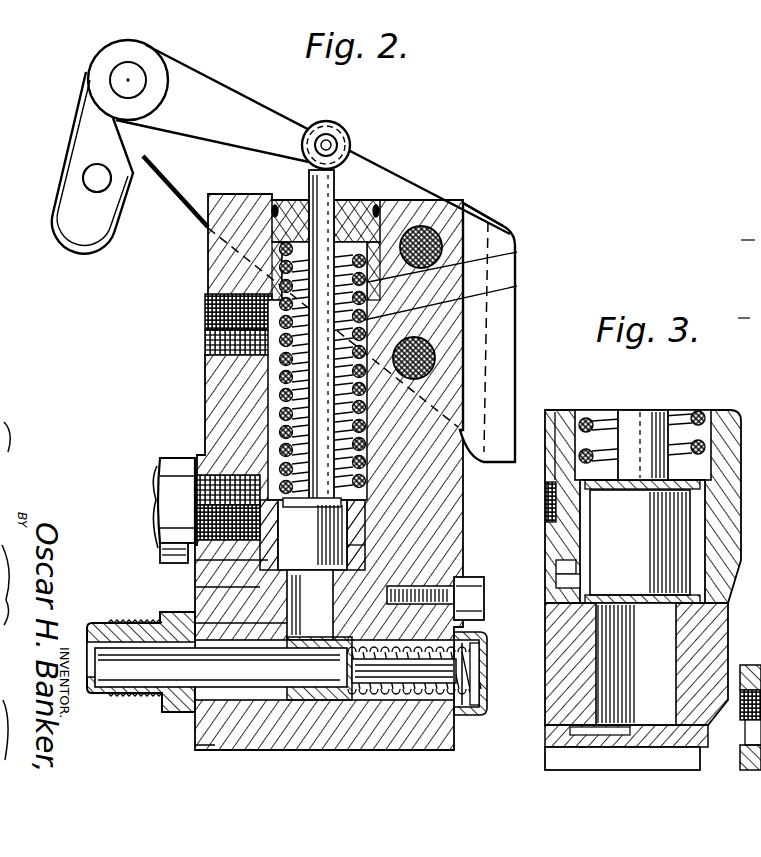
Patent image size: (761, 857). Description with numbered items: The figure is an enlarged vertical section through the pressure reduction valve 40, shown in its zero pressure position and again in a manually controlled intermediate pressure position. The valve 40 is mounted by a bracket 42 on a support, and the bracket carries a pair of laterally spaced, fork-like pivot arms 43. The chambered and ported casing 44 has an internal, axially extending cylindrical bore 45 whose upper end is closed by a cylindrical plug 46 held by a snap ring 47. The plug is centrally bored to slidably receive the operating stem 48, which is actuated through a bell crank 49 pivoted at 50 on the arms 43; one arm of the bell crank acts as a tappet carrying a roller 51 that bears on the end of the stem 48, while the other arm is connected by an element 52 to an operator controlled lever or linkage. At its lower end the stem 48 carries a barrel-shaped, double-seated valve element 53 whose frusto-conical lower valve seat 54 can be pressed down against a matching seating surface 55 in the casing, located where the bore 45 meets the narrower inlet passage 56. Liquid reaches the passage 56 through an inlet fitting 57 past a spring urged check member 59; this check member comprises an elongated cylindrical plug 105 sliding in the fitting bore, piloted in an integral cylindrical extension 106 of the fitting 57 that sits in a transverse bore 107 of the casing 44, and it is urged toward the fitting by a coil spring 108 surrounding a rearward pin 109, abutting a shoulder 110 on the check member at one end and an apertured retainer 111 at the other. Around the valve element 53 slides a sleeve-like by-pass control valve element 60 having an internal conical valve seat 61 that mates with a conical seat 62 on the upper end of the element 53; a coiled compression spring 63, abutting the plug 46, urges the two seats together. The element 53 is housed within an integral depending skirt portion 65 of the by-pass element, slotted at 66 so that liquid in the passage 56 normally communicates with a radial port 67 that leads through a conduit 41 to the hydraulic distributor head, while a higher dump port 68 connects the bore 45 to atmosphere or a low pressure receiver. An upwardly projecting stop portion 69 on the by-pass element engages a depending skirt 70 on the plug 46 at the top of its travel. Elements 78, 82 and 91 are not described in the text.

In FIG. 2, the pressure reduction valve 40 is at (510, 176).
In FIG. 2, the conduit 41 is at (182, 502).
In FIG. 2, the bracket 42 is at (500, 318).
In FIG. 2, the pivot arms 43 is at (171, 168).
In FIG. 2, the casing 44 is at (222, 378).
In FIG. 3, the casing 44 is at (560, 650).
In FIG. 2, the bore 45 is at (517, 286).
In FIG. 2, the plug 46 is at (351, 207).
In FIG. 2, the snap ring 47 is at (396, 206).
In FIG. 2, the operating stem 48 is at (316, 193).
In FIG. 3, the operating stem 48 is at (637, 430).
In FIG. 2, the bell crank 49 is at (195, 78).
In FIG. 2, the pivot 50 is at (131, 76).
In FIG. 2, the roller 51 is at (332, 134).
In FIG. 2, the connecting element 52 is at (76, 185).
In FIG. 2, the valve element 53 is at (364, 547).
In FIG. 3, the valve element 53 is at (680, 535).
In FIG. 2, the lower valve seat 54 is at (197, 583).
In FIG. 3, the lower valve seat 54 is at (585, 606).
In FIG. 2, the seating surface 55 is at (404, 578).
In FIG. 3, the seating surface 55 is at (668, 620).
In FIG. 2, the inlet passage 56 is at (320, 632).
In FIG. 2, the inlet fitting 57 is at (143, 668).
In FIG. 2, the check member 59 is at (297, 675).
In FIG. 3, the check member 59 is at (606, 757).
In FIG. 2, the by-pass control valve element 60 is at (357, 513).
In FIG. 3, the by-pass control valve element 60 is at (570, 508).
In FIG. 2, the conical valve seat 61 is at (364, 507).
In FIG. 3, the conical valve seat 61 is at (684, 450).
In FIG. 2, the conical seat 62 is at (253, 477).
In FIG. 3, the conical seat 62 is at (622, 487).
In FIG. 2, the compression spring 63 is at (233, 367).
In FIG. 3, the compression spring 63 is at (590, 421).
In FIG. 2, the skirt portion 65 is at (197, 514).
In FIG. 3, the skirt portion 65 is at (568, 566).
In FIG. 2, the slots 66 is at (192, 562).
In FIG. 3, the slots 66 is at (572, 586).
In FIG. 2, the radial port 67 is at (213, 490).
In FIG. 2, the dump port 68 is at (207, 300).
In FIG. 2, the stop portion 69 is at (250, 422).
In FIG. 3, the stop portion 69 is at (572, 414).
In FIG. 2, the plug skirt 70 is at (517, 252).
In FIG. 3, the conduit 78 is at (751, 233).
In FIG. 3, the conduit 82 is at (749, 311).
In FIG. 3, the fitting 91 is at (749, 756).
In FIG. 2, the cylindrical plug 105 is at (213, 746).
In FIG. 2, the cylindrical extension 106 is at (333, 703).
In FIG. 3, the cylindrical extension 106 is at (645, 750).
In FIG. 2, the transverse bore 107 is at (442, 722).
In FIG. 2, the coil spring 108 is at (460, 708).
In FIG. 2, the pin 109 is at (458, 677).
In FIG. 2, the shoulder 110 is at (388, 698).
In FIG. 2, the retainer 111 is at (450, 690).